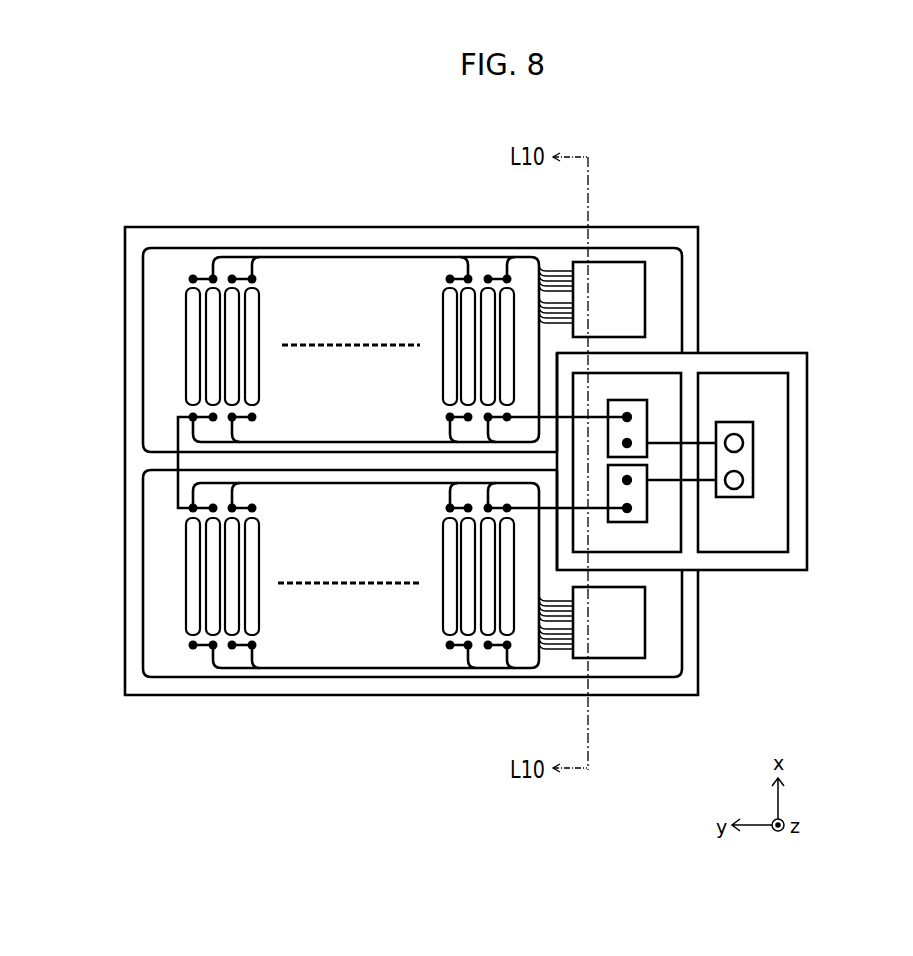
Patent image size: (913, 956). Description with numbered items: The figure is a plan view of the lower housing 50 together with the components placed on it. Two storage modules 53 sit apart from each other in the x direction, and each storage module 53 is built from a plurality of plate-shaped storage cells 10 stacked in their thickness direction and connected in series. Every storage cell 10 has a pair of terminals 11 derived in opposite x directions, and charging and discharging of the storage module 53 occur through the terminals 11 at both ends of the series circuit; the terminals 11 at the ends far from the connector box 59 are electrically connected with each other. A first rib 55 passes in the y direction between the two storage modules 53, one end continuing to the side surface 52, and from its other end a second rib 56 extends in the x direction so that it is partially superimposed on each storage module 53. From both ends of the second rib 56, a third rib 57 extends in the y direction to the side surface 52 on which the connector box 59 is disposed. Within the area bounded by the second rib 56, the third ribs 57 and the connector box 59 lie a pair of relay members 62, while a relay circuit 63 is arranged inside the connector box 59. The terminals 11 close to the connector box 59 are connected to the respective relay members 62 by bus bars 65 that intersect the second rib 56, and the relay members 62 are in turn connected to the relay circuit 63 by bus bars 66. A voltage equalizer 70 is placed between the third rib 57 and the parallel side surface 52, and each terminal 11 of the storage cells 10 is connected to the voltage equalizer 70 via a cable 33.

The storage cell 10 is at (187, 300).
The terminal 11 is at (191, 277).
The cable 33 is at (382, 440).
The lower housing 50 is at (693, 205).
The side surface 52 is at (472, 226).
The storage module 53 is at (182, 322).
The first rib 55 is at (163, 463).
The second rib 56 is at (563, 545).
The third rib 57 is at (658, 362).
The connector box 59 is at (812, 395).
The relay member 62 is at (650, 420).
The relay circuit 63 is at (757, 457).
The bus bar 65 is at (548, 413).
The bus bar 66 is at (680, 437).
The voltage equalizer 70 is at (648, 297).